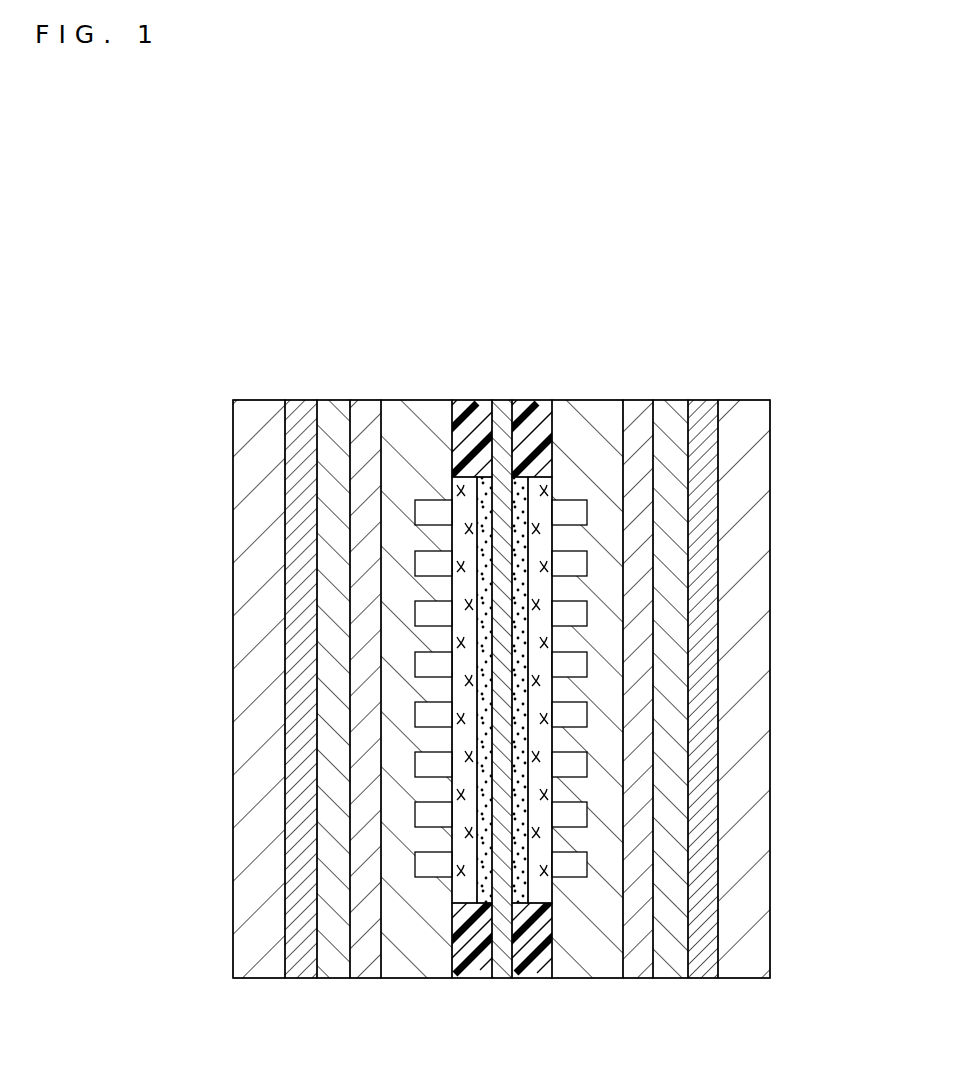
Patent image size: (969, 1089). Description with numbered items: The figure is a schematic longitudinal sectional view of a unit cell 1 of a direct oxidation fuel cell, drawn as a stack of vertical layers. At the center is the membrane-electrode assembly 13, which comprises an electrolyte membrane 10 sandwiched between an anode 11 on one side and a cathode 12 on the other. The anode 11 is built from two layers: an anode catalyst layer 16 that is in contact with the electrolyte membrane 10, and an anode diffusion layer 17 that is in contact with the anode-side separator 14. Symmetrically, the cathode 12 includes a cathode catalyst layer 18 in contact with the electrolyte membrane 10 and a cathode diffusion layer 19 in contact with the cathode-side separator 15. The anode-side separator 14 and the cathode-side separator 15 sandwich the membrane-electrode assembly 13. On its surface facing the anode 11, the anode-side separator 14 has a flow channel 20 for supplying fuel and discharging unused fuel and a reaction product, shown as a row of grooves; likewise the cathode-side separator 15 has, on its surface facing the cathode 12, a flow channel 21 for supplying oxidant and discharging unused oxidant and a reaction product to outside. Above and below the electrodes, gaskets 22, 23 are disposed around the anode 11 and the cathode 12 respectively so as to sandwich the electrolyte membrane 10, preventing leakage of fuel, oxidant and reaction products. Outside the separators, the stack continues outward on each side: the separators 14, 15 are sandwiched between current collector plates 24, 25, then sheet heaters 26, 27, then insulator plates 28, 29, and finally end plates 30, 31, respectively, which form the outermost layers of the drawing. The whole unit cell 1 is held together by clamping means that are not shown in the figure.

The unit cell 1 is at (683, 207).
The electrolyte membrane 10 is at (505, 470).
The anode 11 is at (447, 587).
The cathode 12 is at (565, 588).
The membrane-electrode assembly 13 is at (510, 596).
The anode-side separator 14 is at (381, 680).
The cathode-side separator 15 is at (613, 676).
The anode catalyst layer 16 is at (490, 455).
The anode diffusion layer 17 is at (451, 450).
The cathode catalyst layer 18 is at (522, 470).
The cathode diffusion layer 19 is at (550, 455).
The flow channel 20 is at (432, 870).
The flow channel 21 is at (572, 867).
The gasket 22 is at (472, 937).
The gasket 23 is at (528, 947).
The current collector plate 24 is at (368, 470).
The current collector plate 25 is at (637, 475).
The sheet heater 26 is at (335, 555).
The sheet heater 27 is at (670, 558).
The insulator plate 28 is at (300, 625).
The insulator plate 29 is at (703, 630).
The end plate 30 is at (258, 697).
The end plate 31 is at (743, 708).